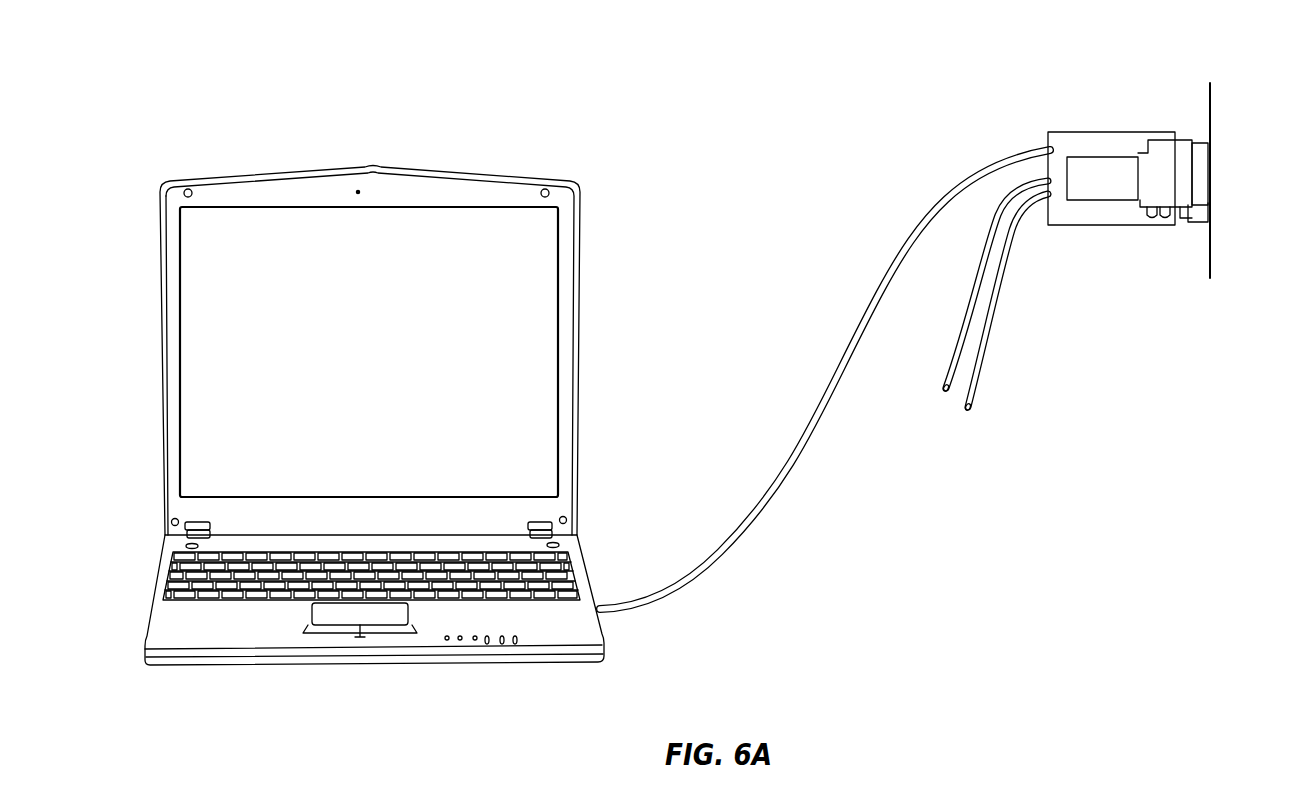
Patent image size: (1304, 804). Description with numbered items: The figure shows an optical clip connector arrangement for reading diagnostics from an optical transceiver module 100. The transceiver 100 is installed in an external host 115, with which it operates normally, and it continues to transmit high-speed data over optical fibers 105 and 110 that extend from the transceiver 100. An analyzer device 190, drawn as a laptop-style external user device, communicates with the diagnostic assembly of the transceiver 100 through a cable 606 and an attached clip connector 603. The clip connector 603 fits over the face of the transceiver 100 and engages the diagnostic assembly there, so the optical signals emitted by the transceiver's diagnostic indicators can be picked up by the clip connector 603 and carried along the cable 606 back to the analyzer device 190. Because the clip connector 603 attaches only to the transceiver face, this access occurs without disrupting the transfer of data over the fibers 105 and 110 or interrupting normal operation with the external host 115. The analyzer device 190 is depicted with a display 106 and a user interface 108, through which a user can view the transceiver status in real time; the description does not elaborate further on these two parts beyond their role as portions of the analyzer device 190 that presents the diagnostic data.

The optical transceiver module 100 is at (1204, 224).
The optical fiber 105 is at (1006, 380).
The optical fiber 110 is at (1006, 302).
The display 106 is at (355, 372).
The user interface 108 is at (416, 522).
The external host 115 is at (1238, 177).
The analyzer device 190 is at (407, 468).
The clip connector 603 is at (1066, 118).
The cable 606 is at (840, 292).